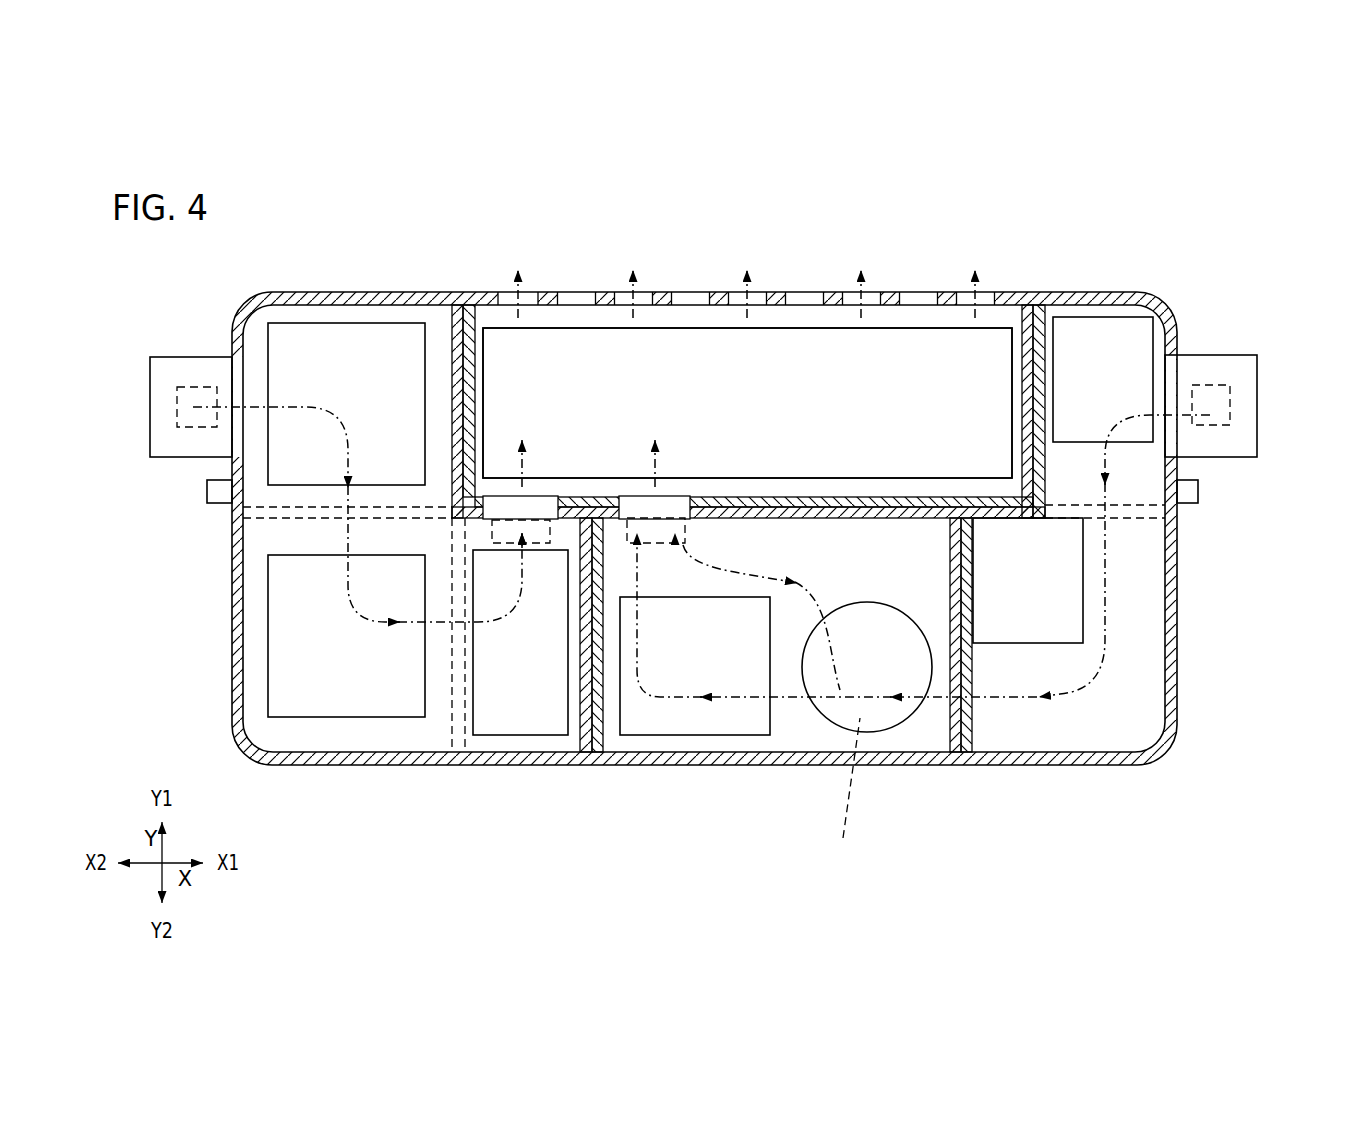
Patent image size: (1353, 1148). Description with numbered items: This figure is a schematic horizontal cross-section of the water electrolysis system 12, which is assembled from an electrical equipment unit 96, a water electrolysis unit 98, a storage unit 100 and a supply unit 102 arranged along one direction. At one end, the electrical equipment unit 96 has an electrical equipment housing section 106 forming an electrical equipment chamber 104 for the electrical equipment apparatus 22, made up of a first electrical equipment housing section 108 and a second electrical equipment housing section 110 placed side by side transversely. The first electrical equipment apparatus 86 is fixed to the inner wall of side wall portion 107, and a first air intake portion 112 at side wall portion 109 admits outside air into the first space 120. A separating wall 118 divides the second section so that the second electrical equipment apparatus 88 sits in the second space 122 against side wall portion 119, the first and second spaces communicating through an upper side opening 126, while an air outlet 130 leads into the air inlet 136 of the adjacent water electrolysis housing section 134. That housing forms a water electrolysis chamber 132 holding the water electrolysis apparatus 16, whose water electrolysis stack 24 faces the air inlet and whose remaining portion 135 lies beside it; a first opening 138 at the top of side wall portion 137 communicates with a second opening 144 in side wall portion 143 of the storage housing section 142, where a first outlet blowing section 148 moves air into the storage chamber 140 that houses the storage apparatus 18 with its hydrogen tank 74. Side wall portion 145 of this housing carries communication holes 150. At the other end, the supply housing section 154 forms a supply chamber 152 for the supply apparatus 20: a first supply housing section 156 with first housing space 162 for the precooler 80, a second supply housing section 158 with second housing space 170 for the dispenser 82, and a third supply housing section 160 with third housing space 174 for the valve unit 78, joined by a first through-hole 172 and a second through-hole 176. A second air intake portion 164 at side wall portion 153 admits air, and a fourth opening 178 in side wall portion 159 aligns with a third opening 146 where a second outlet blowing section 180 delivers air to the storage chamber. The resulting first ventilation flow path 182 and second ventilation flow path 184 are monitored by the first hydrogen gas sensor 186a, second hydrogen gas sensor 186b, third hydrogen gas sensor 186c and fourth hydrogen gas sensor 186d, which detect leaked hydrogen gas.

The water electrolysis system 12 is at (1203, 231).
The water electrolysis apparatus 16 is at (890, 737).
The storage apparatus 18 is at (805, 328).
The supply apparatus 20 is at (302, 317).
The electrical equipment apparatus 22 is at (952, 386).
The water electrolysis stack 24 is at (882, 603).
The hydrogen tank 74 is at (805, 328).
The valve unit 78 is at (547, 737).
The precooler 80 is at (392, 323).
The dispenser 82 is at (298, 718).
The first electrical equipment apparatus 86 is at (1063, 422).
The second electrical equipment apparatus 88 is at (988, 527).
The electrical equipment unit 96 is at (1112, 283).
The water electrolysis unit 98 is at (892, 502).
The storage unit 100 is at (836, 285).
The supply unit 102 is at (218, 575).
The electrical equipment chamber 104 is at (1137, 702).
The electrical equipment housing section 106 is at (1256, 486).
The side wall portion 107 is at (1043, 370).
The first electrical equipment housing section 108 is at (1198, 496).
The side wall portion 109 is at (1168, 342).
The second electrical equipment housing section 110 is at (1170, 548).
The first air intake portion 112 is at (1257, 353).
The separating wall 118 is at (1133, 652).
The side wall portion 119 is at (973, 652).
The first space 120 is at (1142, 450).
The second space 122 is at (1133, 598).
The upper side opening 126 is at (1125, 520).
The air outlet 130 is at (975, 742).
The water electrolysis chamber 132 is at (792, 730).
The water electrolysis housing section 134 is at (725, 753).
The portion of the water electrolysis apparatus 135 is at (655, 736).
The air inlet 136 is at (945, 742).
The side wall portion 137 is at (855, 510).
The first opening 138 is at (690, 520).
The storage chamber 140 is at (922, 343).
The storage housing section 142 is at (1018, 292).
The side wall portion 143 is at (780, 497).
The second opening 144 is at (690, 500).
The side wall portion 145 is at (718, 291).
The third opening 146 is at (558, 500).
The first outlet blowing section 148 is at (632, 500).
The communication holes 150 is at (690, 300).
The supply chamber 152 is at (437, 327).
The side wall portion 153 is at (232, 472).
The supply housing section 154 is at (365, 289).
The first supply housing section 156 is at (247, 300).
The second supply housing section 158 is at (253, 760).
The side wall portion 159 is at (577, 503).
The third supply housing section 160 is at (532, 752).
The first housing space 162 is at (263, 318).
The second air intake portion 164 is at (150, 357).
The second housing space 170 is at (255, 680).
The first through-hole 172 is at (258, 521).
The third housing space 174 is at (474, 752).
The second through-hole 176 is at (452, 718).
The fourth opening 178 is at (539, 562).
The second outlet blowing section 180 is at (500, 503).
The first ventilation flow path 182 is at (1083, 690).
The second ventilation flow path 184 is at (347, 583).
The first hydrogen gas sensor 186a is at (1230, 398).
The second hydrogen gas sensor 186b is at (657, 545).
The third hydrogen gas sensor 186c is at (177, 405).
The fourth hydrogen gas sensor 186d is at (492, 535).